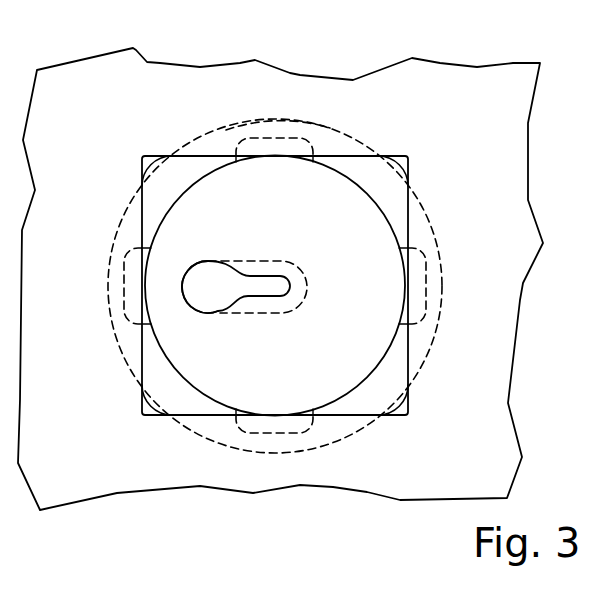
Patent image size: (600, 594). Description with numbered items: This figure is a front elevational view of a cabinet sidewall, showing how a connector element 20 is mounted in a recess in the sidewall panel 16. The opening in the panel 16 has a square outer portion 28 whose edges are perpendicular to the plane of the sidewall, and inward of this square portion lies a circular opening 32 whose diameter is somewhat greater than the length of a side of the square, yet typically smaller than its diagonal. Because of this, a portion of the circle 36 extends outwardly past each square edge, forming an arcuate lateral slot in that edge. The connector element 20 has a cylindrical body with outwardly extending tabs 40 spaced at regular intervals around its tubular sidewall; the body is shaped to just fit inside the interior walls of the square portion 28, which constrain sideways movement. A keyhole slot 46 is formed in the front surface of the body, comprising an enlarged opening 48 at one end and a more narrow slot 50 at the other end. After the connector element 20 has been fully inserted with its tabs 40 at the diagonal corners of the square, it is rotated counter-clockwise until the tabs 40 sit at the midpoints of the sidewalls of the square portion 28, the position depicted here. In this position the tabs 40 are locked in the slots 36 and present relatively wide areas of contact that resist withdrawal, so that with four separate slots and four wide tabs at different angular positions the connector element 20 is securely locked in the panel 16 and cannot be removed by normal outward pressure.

The panel 16 is at (139, 103).
The connector element 20 is at (372, 190).
The square outer portion 28 is at (407, 353).
The circular opening 32 is at (362, 144).
The portion of the circle 36 is at (225, 140).
The tabs 40 is at (295, 147).
The keyhole slot 46 is at (231, 340).
The enlarged opening 48 is at (208, 261).
The narrow slot 50 is at (266, 277).